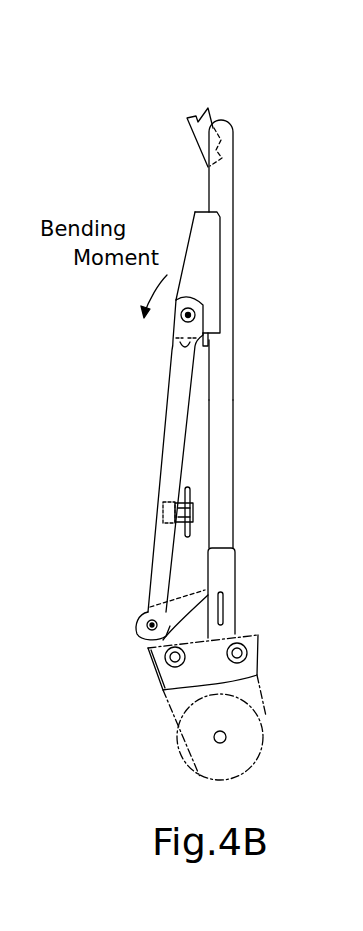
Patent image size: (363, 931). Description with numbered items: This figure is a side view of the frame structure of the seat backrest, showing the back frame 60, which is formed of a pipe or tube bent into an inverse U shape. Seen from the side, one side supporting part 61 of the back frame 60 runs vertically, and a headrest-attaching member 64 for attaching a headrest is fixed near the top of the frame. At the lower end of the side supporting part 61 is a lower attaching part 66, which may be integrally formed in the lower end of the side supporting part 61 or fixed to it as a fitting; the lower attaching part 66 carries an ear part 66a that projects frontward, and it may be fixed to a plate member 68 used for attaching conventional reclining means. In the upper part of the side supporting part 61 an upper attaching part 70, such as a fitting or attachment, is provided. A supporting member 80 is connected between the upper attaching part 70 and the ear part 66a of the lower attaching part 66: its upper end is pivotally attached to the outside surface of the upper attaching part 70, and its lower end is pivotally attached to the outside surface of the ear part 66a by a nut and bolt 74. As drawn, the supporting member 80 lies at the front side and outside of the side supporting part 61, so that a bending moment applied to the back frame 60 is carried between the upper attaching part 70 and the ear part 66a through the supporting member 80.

The back frame 60 is at (230, 188).
The side supporting part 61 is at (225, 403).
The headrest-attaching member 64 is at (208, 108).
The lower attaching part 66 is at (222, 573).
The ear part 66a is at (180, 642).
The plate member 68 is at (260, 700).
The upper attaching part 70 is at (205, 253).
The nut and bolt 74 is at (146, 612).
The supporting member 80 is at (170, 452).